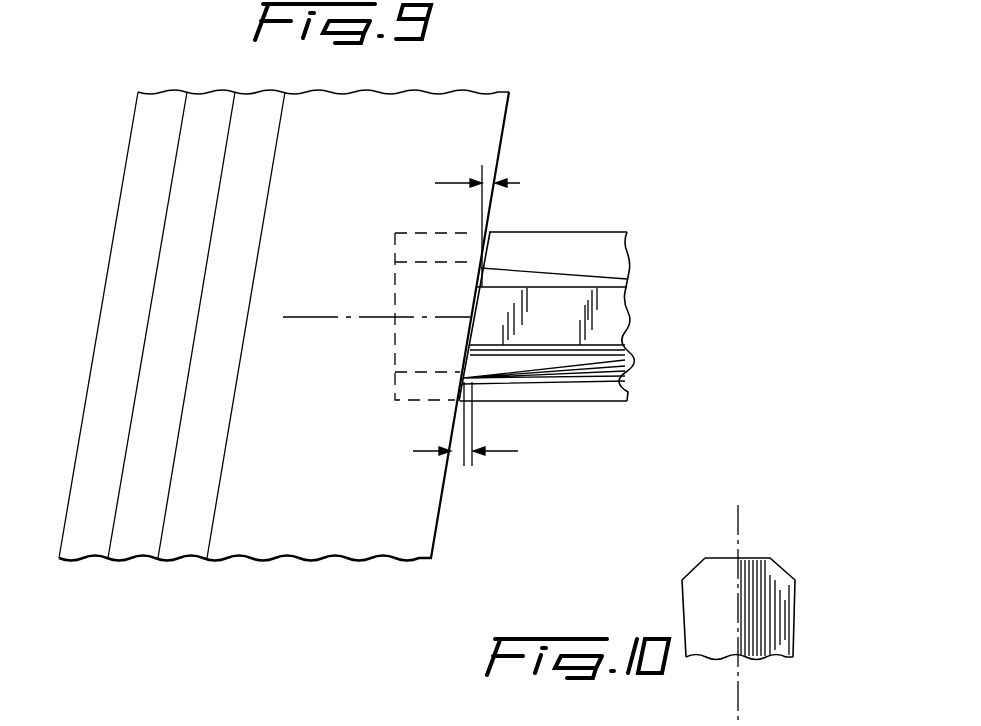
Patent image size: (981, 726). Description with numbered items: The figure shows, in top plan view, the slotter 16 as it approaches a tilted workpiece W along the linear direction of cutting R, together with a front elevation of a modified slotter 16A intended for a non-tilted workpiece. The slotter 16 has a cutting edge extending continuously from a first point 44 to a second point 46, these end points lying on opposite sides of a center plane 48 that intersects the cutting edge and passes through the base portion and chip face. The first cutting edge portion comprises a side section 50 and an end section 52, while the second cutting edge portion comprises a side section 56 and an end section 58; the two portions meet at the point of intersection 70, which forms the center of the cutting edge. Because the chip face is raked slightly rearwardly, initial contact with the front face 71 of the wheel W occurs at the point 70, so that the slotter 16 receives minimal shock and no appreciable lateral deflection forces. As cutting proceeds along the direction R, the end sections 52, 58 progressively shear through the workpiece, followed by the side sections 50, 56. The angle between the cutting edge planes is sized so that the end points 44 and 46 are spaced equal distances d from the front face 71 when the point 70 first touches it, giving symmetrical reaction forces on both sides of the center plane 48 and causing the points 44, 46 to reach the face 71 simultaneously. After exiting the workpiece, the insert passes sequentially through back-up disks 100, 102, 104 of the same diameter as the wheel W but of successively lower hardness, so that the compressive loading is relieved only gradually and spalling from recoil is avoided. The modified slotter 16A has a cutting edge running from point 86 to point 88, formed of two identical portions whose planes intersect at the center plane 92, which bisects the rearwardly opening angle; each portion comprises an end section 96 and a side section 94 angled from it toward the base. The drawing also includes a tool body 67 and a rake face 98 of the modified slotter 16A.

In FIG. 9, the slotter 16 is at (583, 406).
In FIG. 10, the modified slotter 16A is at (798, 631).
In FIG. 9, the first end point of cutting edge 44 is at (476, 384).
In FIG. 9, the second end point of cutting edge 46 is at (484, 275).
In FIG. 9, the center plane 48 is at (327, 318).
In FIG. 9, the side section of first cutting edge portion 50 is at (468, 355).
In FIG. 9, the end section of first cutting edge portion 52 is at (468, 334).
In FIG. 9, the side section of second cutting edge portion 56 is at (478, 281).
In FIG. 9, the end section of second cutting edge portion 58 is at (475, 296).
In FIG. 9, the tool body 67 is at (612, 327).
In FIG. 9, the point of intersection 70 is at (472, 317).
In FIG. 9, the front face of wheel 71 is at (433, 540).
In FIG. 10, the first end point of cutting edge of modified slotter 86 is at (676, 579).
In FIG. 10, the second end point of cutting edge of modified slotter 88 is at (803, 575).
In FIG. 10, the center plane of insert 92 is at (741, 694).
In FIG. 10, the side section 94 is at (783, 572).
In FIG. 10, the end section 96 is at (751, 557).
In FIG. 10, the rake face 98 is at (735, 567).
In FIG. 9, the back-up disk 100 is at (190, 545).
In FIG. 9, the back-up disk 102 is at (137, 545).
In FIG. 9, the back-up disk 104 is at (85, 545).
In FIG. 9, the workpiece W is at (333, 545).
In FIG. 9, the linear direction of cutting R is at (655, 317).
In FIG. 9, the distance d is at (471, 468).